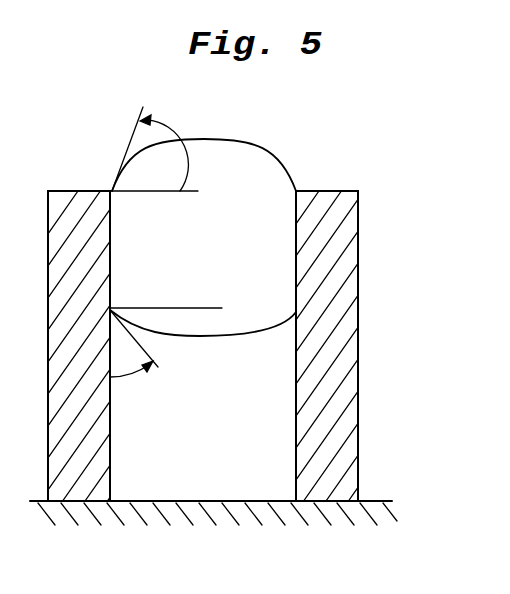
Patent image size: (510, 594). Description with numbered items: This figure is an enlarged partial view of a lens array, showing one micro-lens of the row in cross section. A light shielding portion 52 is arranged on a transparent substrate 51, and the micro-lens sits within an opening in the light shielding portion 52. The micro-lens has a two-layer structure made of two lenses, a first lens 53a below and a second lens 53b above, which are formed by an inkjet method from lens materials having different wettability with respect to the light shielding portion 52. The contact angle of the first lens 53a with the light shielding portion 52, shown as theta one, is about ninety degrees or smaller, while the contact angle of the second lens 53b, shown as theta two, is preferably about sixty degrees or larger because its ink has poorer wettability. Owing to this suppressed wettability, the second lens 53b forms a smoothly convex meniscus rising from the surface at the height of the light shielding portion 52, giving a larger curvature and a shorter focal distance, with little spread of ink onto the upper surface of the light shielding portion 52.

The transparent substrate 51 is at (132, 520).
The light shielding portion 52 is at (340, 371).
The first lens 53a is at (245, 475).
The second lens 53b is at (272, 183).